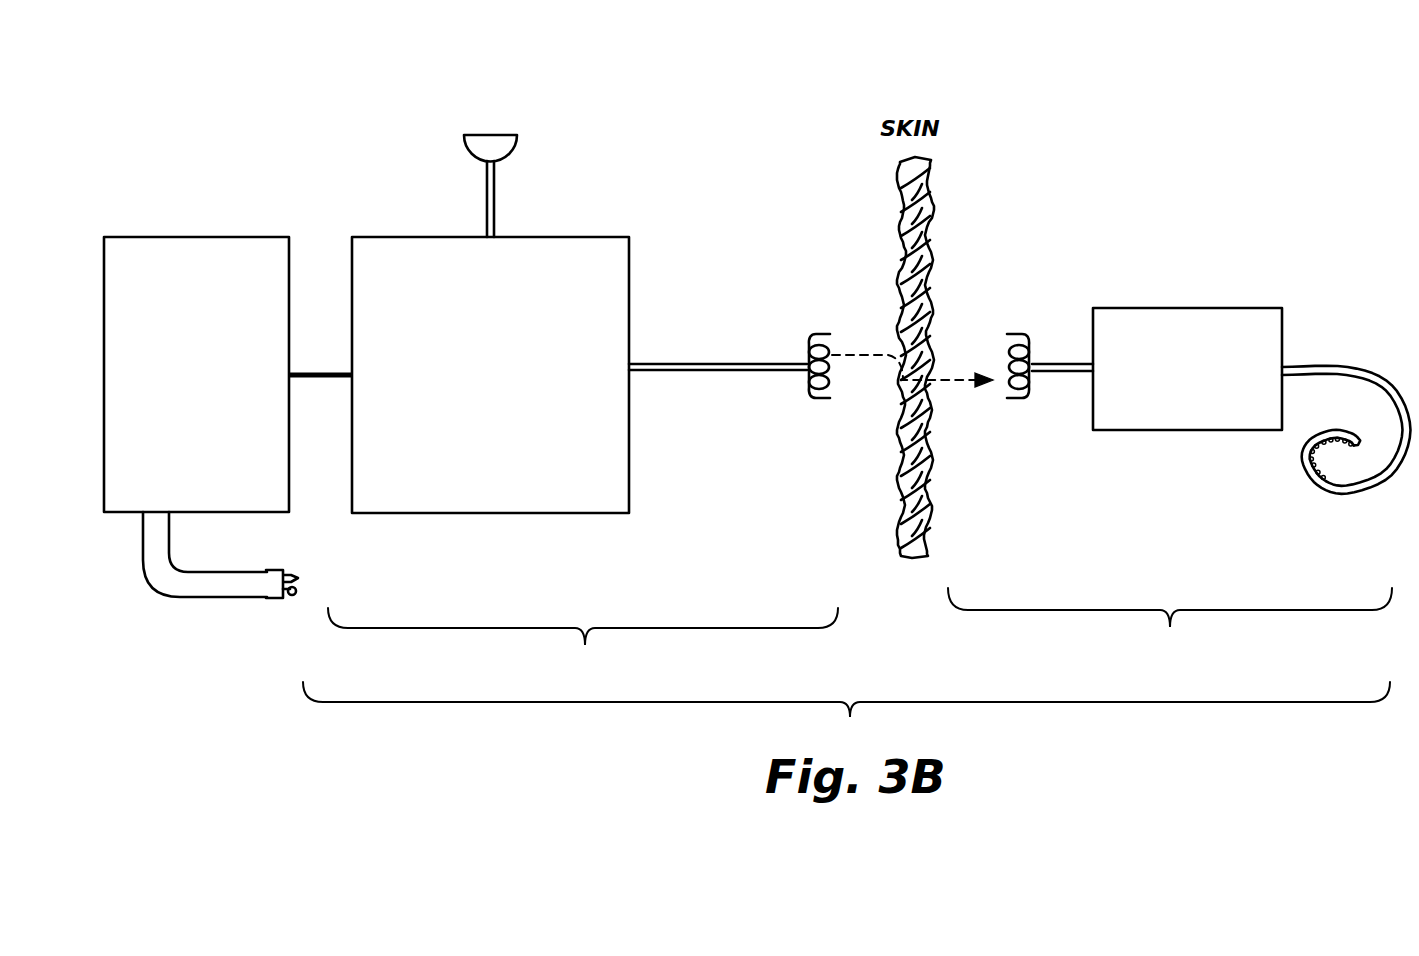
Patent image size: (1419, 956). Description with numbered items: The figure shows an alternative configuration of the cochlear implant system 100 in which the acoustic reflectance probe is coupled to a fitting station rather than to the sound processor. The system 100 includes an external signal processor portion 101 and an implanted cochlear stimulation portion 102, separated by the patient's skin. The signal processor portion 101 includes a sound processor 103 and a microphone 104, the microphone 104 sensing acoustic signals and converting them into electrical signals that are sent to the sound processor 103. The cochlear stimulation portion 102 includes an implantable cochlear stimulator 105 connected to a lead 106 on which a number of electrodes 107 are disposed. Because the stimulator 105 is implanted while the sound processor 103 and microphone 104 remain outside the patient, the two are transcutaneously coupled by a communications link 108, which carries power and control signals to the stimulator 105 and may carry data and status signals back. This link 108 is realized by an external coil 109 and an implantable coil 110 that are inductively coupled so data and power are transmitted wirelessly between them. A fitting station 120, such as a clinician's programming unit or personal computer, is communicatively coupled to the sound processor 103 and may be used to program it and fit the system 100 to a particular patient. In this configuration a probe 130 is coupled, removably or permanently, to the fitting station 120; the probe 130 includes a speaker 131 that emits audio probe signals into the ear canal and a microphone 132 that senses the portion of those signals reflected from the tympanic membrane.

The cochlear implant system 100 is at (372, 120).
The external signal processor portion 101 is at (583, 523).
The implanted cochlear stimulation portion 102 is at (1170, 624).
The sound processor 103 is at (629, 292).
The microphone 104 is at (488, 135).
The implantable cochlear stimulator 105 is at (1193, 308).
The lead 106 is at (1381, 495).
The electrodes 107 is at (1308, 480).
The communications link 108 is at (942, 380).
The external coil 109 is at (818, 400).
The implantable coil 110 is at (1018, 400).
The fitting station 120 is at (221, 466).
The probe 130 is at (203, 588).
The speaker 131 is at (299, 574).
The microphone 132 is at (291, 597).